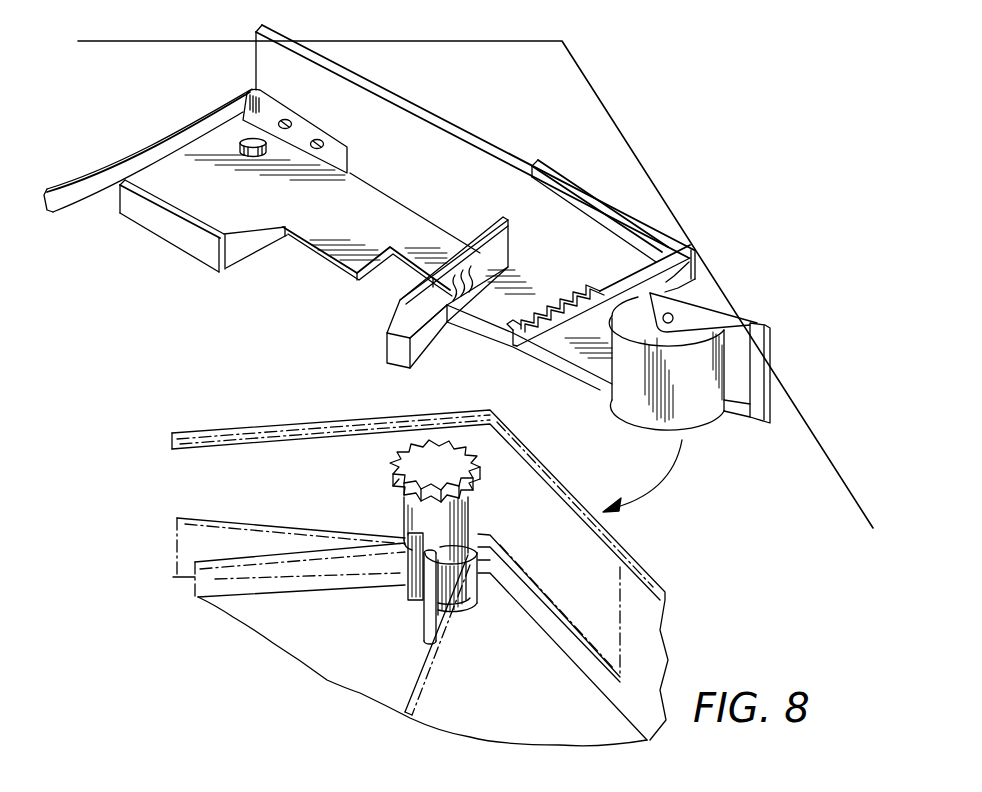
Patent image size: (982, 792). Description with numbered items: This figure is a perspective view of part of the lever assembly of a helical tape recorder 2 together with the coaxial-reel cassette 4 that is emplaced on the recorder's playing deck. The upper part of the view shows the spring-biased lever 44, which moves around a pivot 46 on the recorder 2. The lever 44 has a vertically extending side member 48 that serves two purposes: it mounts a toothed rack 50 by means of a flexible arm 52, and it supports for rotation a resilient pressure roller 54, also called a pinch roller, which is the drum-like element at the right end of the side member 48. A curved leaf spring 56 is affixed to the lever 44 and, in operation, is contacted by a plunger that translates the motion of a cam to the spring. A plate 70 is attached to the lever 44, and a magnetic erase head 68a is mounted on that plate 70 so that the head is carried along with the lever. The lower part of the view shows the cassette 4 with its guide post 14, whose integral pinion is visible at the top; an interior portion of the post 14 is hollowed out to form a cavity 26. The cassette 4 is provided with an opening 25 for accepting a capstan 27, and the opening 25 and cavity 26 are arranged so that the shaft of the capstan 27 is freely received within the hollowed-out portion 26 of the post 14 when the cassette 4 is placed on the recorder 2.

The helical tape recorder 2 is at (648, 182).
The coaxial-reel cassette 4 is at (553, 479).
The guide post 14 is at (462, 523).
The opening 25 is at (446, 645).
The hollowed-out interior cavity 26 is at (407, 586).
The capstan 27 is at (422, 623).
The spring-biased lever 44 is at (323, 250).
The pivot 46 is at (243, 140).
The vertically extending side member 48 is at (410, 113).
The rack 50 is at (513, 336).
The flexible arm 52 is at (628, 274).
The resilient pressure roller 54 is at (632, 400).
The leaf spring 56 is at (157, 140).
The magnetic erase head 68a is at (426, 353).
The plate 70 is at (478, 242).